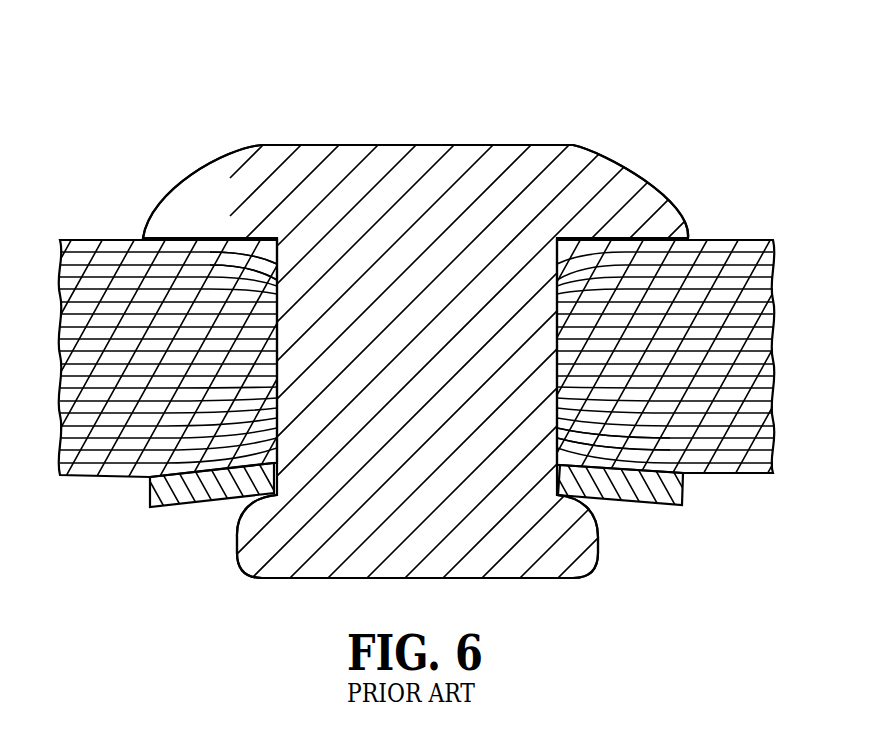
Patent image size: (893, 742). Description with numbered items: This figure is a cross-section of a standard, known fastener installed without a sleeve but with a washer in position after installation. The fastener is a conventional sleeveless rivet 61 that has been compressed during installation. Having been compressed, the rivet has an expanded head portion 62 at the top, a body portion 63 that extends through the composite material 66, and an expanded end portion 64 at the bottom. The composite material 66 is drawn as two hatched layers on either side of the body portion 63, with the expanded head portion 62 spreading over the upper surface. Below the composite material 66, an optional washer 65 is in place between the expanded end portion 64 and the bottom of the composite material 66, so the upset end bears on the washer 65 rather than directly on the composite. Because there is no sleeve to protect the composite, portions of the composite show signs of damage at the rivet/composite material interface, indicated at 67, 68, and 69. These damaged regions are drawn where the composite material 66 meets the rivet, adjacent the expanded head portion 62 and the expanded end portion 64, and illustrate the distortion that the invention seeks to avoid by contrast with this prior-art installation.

The sleeveless rivet 61 is at (332, 145).
The expanded head portion 62 is at (585, 157).
The body portion 63 is at (420, 350).
The expanded end portion 64 is at (522, 562).
The washer 65 is at (663, 497).
The composite material 66 is at (110, 477).
The damage at rivet/composite material interface 67 is at (227, 505).
The damage at rivet/composite material interface 68 is at (252, 246).
The damage at rivet/composite material interface 69 is at (572, 452).